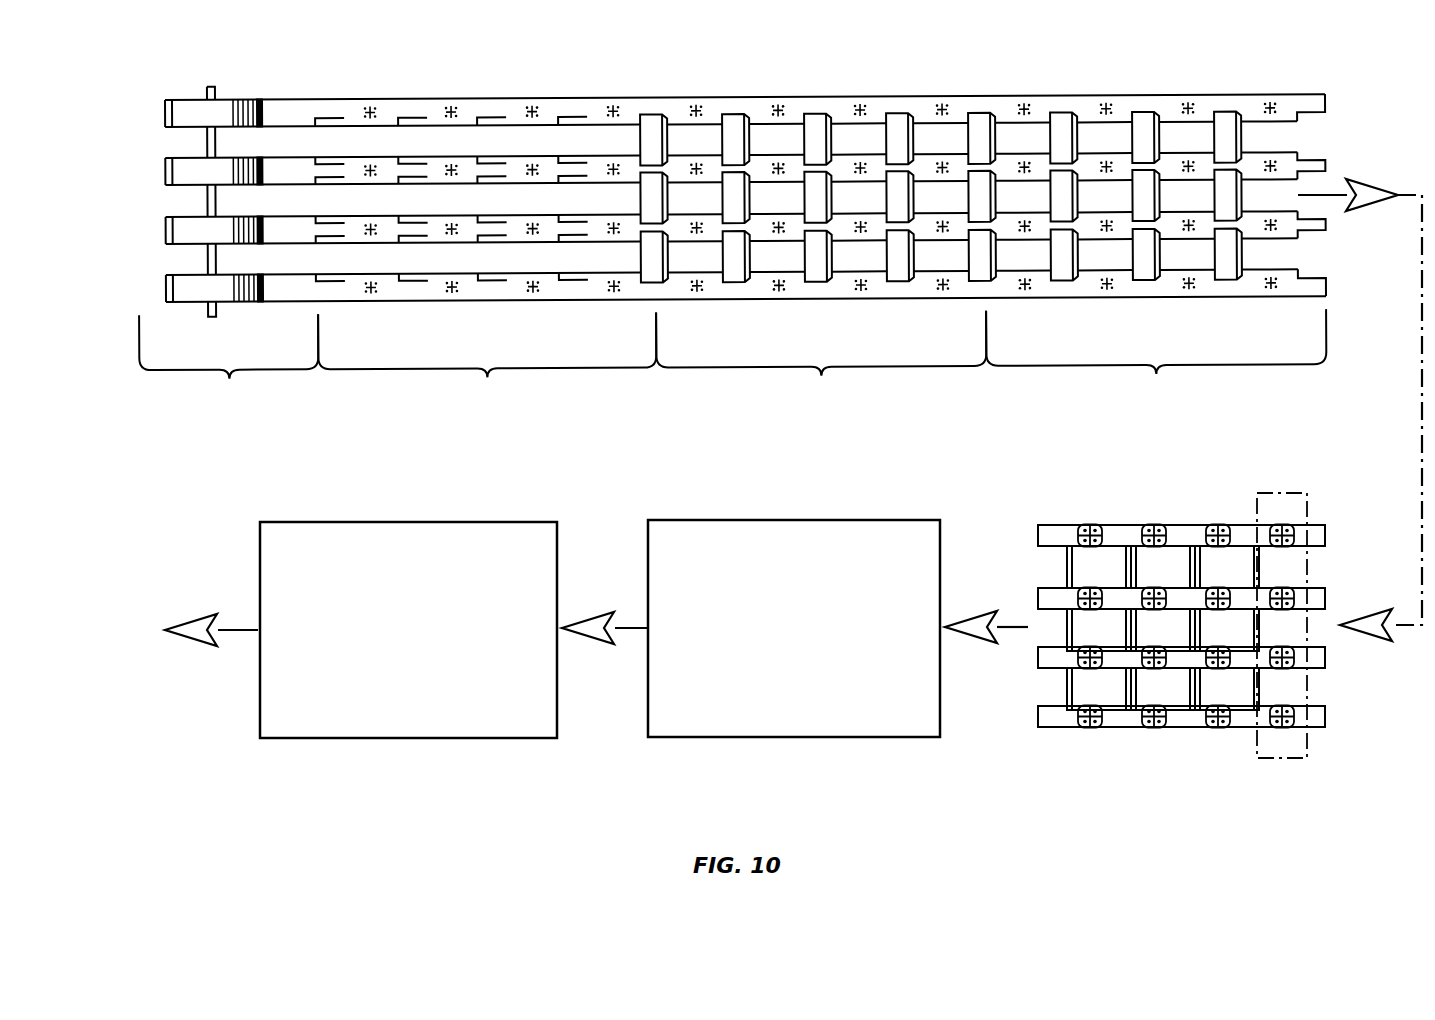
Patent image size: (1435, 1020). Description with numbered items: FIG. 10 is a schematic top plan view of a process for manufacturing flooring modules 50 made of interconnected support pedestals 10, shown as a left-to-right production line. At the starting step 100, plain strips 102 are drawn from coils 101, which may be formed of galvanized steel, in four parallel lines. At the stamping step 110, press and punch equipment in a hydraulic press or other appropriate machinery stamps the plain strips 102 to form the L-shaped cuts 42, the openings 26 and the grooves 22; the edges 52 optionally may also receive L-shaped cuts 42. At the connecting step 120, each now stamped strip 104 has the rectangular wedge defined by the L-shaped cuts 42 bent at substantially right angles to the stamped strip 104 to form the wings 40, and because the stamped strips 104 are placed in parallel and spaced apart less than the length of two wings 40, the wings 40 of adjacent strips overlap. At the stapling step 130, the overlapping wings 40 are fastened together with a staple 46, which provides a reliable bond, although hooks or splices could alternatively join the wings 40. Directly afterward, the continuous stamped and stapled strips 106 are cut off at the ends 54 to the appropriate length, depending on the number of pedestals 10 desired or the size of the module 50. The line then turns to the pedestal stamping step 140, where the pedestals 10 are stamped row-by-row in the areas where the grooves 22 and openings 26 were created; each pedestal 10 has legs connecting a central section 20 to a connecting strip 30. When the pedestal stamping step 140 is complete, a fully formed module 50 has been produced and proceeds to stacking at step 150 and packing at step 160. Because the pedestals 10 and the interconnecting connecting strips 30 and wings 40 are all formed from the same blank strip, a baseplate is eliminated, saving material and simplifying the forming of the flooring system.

The support pedestal 10 is at (1157, 523).
The central section 20 is at (1087, 525).
The groove 22 is at (612, 112).
The opening 26 is at (533, 112).
The connecting strip 30 is at (1188, 530).
The wing 40 is at (840, 131).
The L-shaped cut 42 is at (405, 118).
The staple 46 is at (1157, 142).
The module 50 is at (1032, 533).
The edge 52 is at (480, 303).
The end 54 is at (1325, 100).
The starting step 100 is at (229, 364).
The coil 101 is at (165, 112).
The plain strip 102 is at (224, 105).
The stamped strip 104 is at (732, 110).
The stamped and stapled strip 106 is at (1063, 111).
The stamping step 110 is at (487, 364).
The connecting step 120 is at (821, 363).
The stapling step 130 is at (1156, 362).
The pedestal stamping step 140 is at (1186, 729).
The stacking step 150 is at (811, 738).
The packing step 160 is at (389, 738).